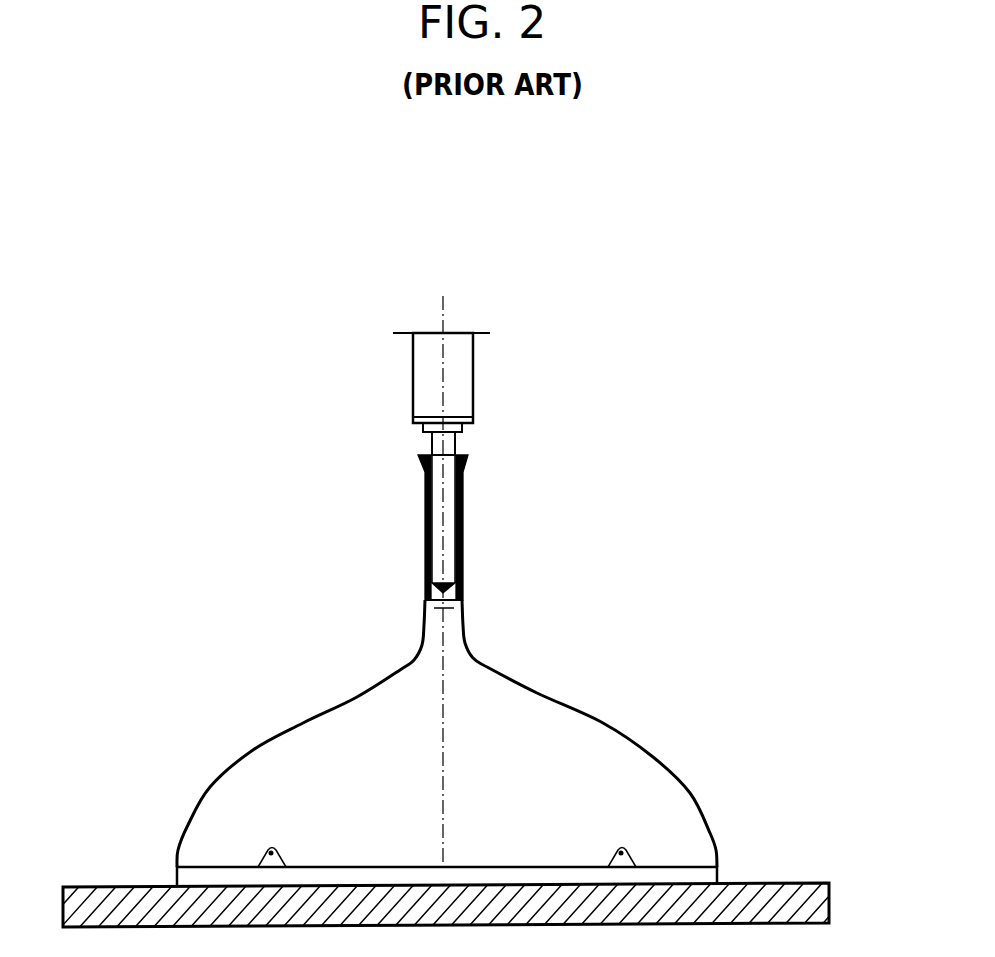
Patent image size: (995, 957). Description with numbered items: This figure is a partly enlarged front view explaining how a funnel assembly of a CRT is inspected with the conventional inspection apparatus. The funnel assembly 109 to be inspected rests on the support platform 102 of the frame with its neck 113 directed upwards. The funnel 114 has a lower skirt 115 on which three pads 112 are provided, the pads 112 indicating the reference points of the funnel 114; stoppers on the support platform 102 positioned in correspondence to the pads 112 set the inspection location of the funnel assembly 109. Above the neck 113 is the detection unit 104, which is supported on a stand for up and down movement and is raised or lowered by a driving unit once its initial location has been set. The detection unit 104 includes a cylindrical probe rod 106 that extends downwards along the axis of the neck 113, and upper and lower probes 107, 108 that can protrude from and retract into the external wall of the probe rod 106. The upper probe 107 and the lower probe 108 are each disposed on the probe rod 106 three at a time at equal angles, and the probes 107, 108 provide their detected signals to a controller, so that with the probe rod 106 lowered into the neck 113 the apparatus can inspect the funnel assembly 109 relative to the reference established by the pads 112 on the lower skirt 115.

The support platform 102 is at (795, 883).
The detection unit 104 is at (392, 373).
The probe rod 106 is at (457, 448).
The upper probe 107 is at (426, 495).
The lower probe 108 is at (427, 575).
The funnel assembly 109 is at (430, 742).
The pad 112 is at (623, 847).
The neck 113 is at (464, 568).
The funnel 114 is at (603, 727).
The lower skirt 115 is at (720, 873).